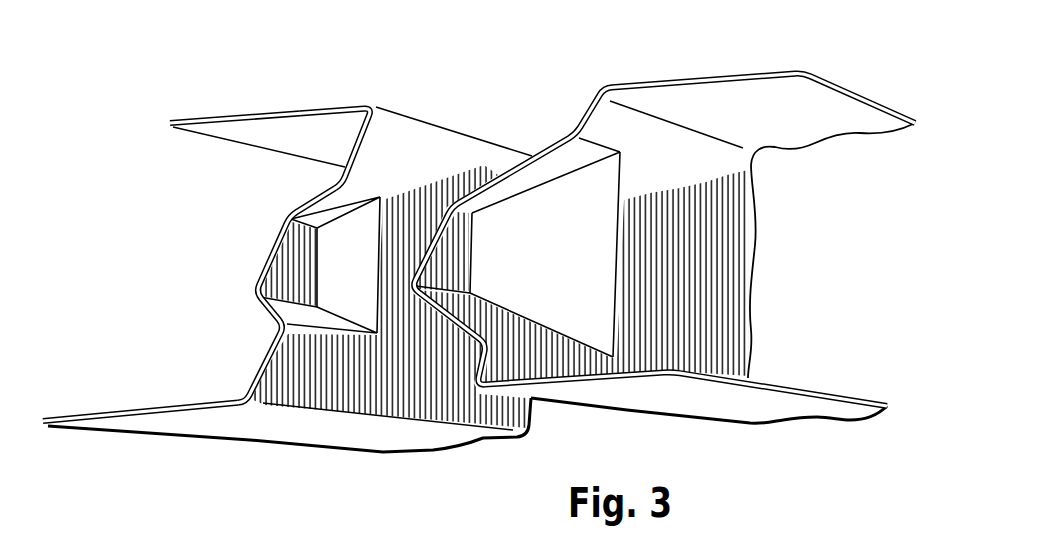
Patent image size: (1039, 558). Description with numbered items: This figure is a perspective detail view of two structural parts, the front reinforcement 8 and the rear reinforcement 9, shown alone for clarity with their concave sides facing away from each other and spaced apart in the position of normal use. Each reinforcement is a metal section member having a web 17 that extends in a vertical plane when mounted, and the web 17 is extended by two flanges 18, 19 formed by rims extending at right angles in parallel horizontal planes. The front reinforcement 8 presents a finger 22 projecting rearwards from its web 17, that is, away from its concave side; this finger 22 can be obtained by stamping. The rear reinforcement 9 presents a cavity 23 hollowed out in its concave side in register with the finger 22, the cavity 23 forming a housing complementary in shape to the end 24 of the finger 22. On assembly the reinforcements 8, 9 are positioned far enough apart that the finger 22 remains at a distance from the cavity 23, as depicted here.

The front reinforcement 8 is at (727, 66).
The rear reinforcement 9 is at (224, 105).
The web 17 is at (252, 367).
The flange 18 is at (287, 108).
The flange 19 is at (214, 440).
The finger 22 is at (478, 168).
The cavity 23 is at (252, 268).
The end of the finger 24 is at (408, 252).